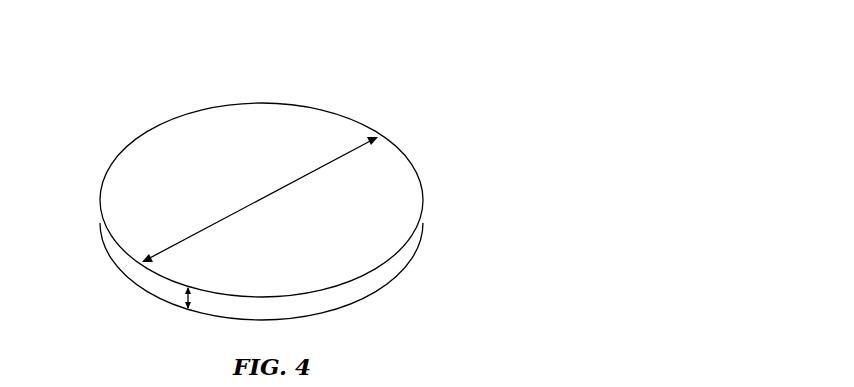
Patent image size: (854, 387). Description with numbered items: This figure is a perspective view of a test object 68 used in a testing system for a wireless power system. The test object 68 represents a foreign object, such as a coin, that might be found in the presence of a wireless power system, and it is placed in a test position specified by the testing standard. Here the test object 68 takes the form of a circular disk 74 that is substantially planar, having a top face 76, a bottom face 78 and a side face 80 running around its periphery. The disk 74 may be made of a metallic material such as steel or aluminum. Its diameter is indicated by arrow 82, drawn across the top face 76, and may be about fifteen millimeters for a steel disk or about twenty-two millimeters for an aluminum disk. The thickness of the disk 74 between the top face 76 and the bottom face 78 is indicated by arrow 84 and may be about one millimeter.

The test object 68 is at (436, 63).
The disk 74 is at (136, 152).
The top face 76 is at (405, 177).
The bottom face 78 is at (399, 294).
The side face 80 is at (404, 254).
The arrow indicating diameter 82 is at (110, 237).
The arrow indicating thickness 84 is at (187, 298).